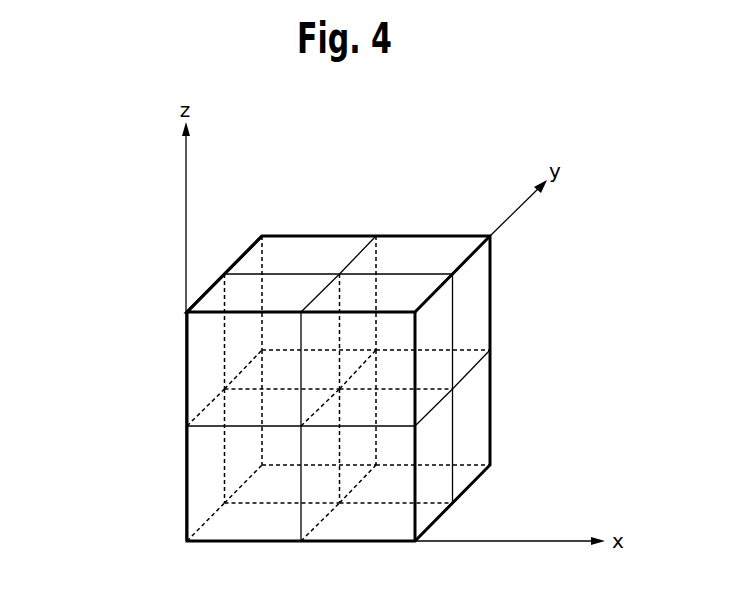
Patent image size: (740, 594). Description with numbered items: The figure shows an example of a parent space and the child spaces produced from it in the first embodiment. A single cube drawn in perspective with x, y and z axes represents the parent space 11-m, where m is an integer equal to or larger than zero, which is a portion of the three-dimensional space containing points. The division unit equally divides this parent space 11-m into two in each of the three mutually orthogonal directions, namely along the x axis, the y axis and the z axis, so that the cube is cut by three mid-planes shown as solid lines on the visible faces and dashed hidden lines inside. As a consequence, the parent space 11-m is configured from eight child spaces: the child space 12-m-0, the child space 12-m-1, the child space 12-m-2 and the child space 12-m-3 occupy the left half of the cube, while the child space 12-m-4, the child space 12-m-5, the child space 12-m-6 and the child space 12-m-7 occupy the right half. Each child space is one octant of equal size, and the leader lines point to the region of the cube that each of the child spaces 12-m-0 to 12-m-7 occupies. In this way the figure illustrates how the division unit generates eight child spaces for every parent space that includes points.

The parent space 11-m is at (322, 182).
The child space 12-m-0 is at (208, 478).
The child space 12-m-1 is at (250, 301).
The child space 12-m-2 is at (243, 408).
The child space 12-m-3 is at (290, 256).
The child space 12-m-4 is at (438, 440).
The child space 12-m-5 is at (438, 329).
The child space 12-m-6 is at (473, 407).
The child space 12-m-7 is at (473, 295).